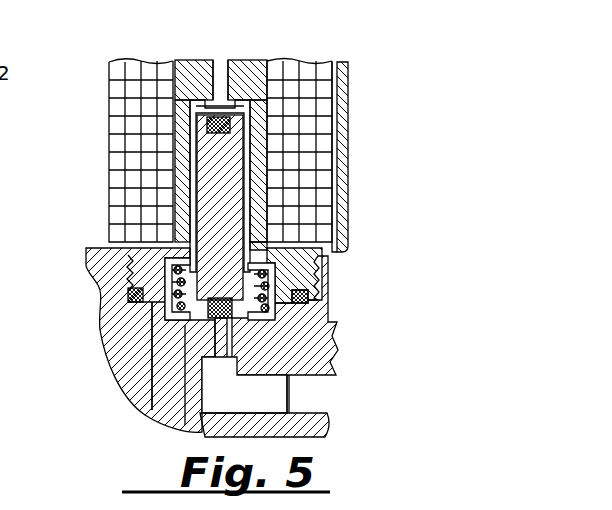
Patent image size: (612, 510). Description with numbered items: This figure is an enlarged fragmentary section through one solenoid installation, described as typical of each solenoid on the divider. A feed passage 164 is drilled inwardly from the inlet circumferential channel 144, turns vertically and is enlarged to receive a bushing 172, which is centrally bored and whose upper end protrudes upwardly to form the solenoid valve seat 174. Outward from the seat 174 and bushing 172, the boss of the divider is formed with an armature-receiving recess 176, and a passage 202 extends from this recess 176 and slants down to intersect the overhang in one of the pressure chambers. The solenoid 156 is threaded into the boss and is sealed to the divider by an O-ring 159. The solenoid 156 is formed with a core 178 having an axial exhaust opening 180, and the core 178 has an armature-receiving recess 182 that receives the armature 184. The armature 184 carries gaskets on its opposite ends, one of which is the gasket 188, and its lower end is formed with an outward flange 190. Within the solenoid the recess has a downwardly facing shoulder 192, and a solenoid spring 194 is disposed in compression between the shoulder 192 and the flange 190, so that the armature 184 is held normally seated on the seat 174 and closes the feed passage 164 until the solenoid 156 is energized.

The circumferential channel 144 is at (302, 397).
The solenoid 156 is at (356, 104).
The O-ring 159 is at (301, 297).
The solenoid feed passage 164 is at (200, 437).
The bushing 172 is at (205, 362).
The solenoid valve seat 174 is at (160, 398).
The armature-receiving recess 176 is at (273, 317).
The core 178 is at (255, 70).
The axial exhaust opening 180 is at (217, 72).
The armature-receiving recess 182 is at (190, 171).
The armature 184 is at (218, 208).
The gasket 188 is at (170, 328).
The outward flange 190 is at (163, 316).
The downwardly facing shoulder 192 is at (268, 247).
The solenoid spring 194 is at (263, 272).
The passage 202 is at (165, 394).